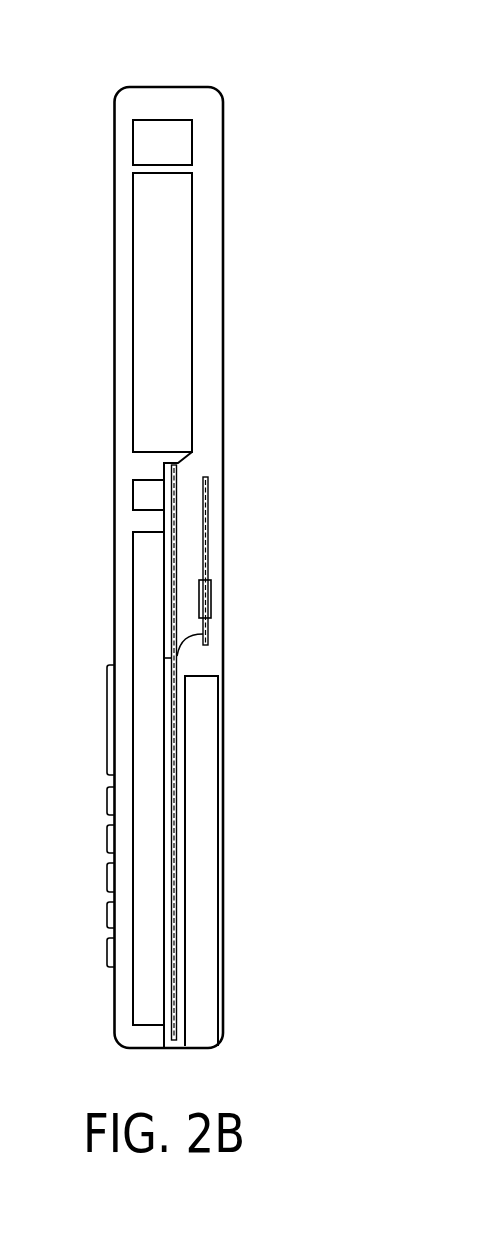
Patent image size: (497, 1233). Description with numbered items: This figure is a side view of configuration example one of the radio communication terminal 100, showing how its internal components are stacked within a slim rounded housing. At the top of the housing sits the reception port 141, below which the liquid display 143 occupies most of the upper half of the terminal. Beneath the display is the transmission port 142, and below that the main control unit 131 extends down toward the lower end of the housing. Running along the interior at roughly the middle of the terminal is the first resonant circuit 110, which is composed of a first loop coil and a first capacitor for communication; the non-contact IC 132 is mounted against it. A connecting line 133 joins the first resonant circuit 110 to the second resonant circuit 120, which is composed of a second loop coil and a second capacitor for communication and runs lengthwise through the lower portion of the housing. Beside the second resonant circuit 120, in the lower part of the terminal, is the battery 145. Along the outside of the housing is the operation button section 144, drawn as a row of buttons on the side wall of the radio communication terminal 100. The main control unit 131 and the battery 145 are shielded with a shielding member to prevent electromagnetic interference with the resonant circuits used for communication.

The radio communication terminal 100 is at (218, 80).
The reception port 141 is at (160, 135).
The liquid display 143 is at (165, 322).
The transmission port 142 is at (143, 494).
The main control unit 131 is at (147, 893).
The second resonant circuit 120 is at (176, 752).
The first resonant circuit 110 is at (209, 518).
The non-contact IC 132 is at (211, 600).
The connecting line 133 is at (183, 660).
The battery 145 is at (205, 948).
The operation button section 144 is at (106, 803).